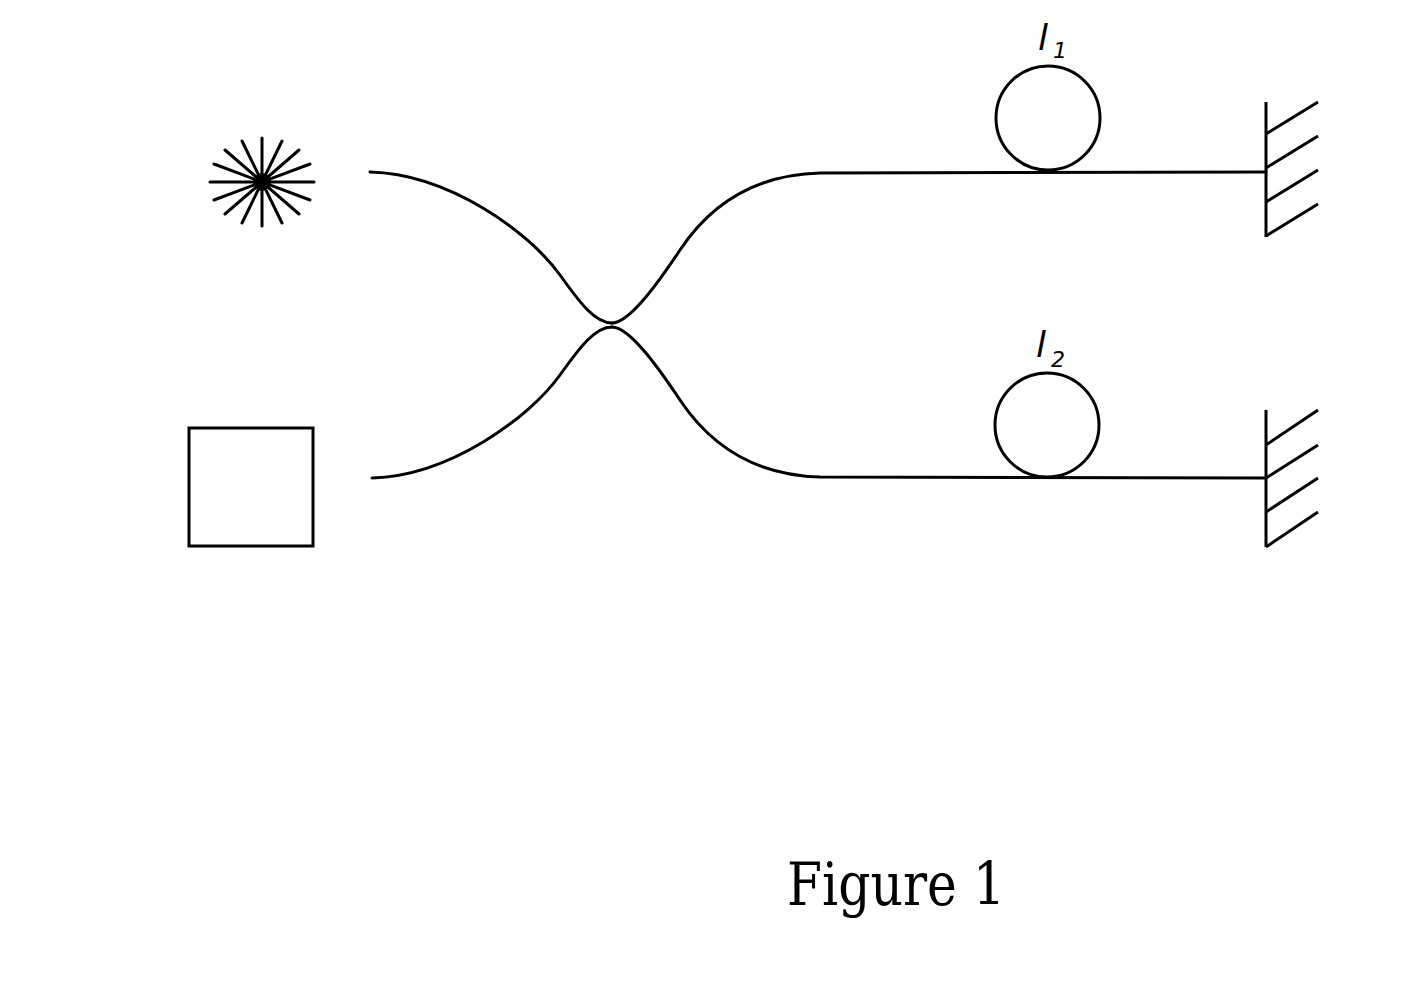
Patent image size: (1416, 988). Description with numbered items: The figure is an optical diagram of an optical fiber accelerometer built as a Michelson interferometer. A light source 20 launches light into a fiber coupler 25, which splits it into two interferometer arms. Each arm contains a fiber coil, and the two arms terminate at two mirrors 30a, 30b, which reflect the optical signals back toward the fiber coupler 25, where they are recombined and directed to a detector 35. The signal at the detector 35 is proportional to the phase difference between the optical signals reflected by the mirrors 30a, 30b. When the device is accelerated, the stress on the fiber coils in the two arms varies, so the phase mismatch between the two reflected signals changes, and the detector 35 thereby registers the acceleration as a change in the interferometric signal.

The light source 20 is at (227, 182).
The fiber coupler 25 is at (620, 366).
The mirror 30a is at (1331, 169).
The mirror 30b is at (1333, 478).
The detector 35 is at (206, 487).